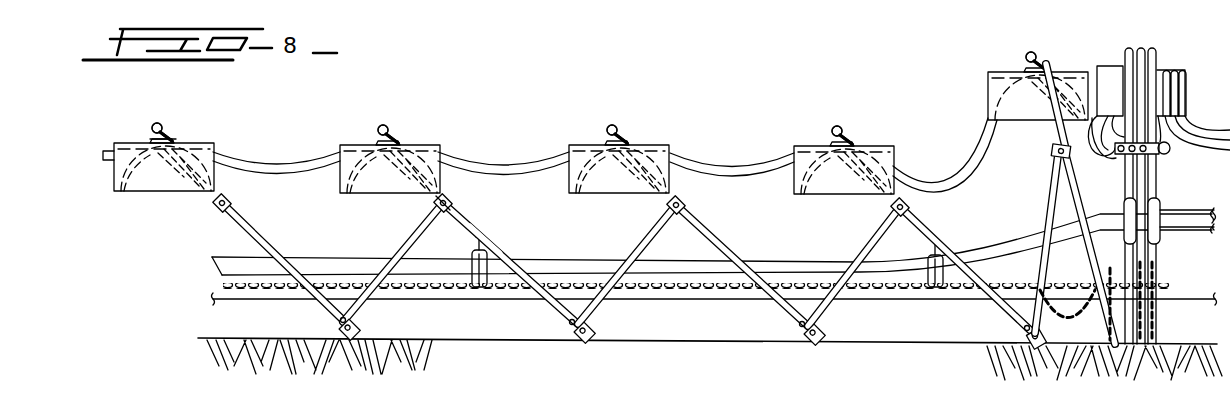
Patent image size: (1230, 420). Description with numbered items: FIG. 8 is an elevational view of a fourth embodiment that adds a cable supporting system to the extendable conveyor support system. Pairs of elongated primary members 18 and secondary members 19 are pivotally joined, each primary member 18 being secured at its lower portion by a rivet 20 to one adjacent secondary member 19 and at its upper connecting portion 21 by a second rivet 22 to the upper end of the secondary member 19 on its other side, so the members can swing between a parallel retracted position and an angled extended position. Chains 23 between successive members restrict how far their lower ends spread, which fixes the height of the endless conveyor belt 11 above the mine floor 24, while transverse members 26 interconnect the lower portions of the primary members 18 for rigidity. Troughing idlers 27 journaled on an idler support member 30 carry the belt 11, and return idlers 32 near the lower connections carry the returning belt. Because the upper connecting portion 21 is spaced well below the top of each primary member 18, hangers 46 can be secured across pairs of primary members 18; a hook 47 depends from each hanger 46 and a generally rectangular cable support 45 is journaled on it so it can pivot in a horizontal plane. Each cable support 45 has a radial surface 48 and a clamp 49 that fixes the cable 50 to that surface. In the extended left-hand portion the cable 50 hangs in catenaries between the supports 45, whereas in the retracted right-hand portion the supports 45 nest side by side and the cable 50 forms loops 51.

The endless conveyor belt 11 is at (334, 257).
The primary member 18 is at (512, 240).
The secondary member 19 is at (408, 246).
The rivet 20 is at (358, 323).
The upper connecting portion 21 is at (452, 198).
The second rivet 22 is at (438, 204).
The chain 23 is at (720, 290).
The mine floor 24 is at (765, 346).
The transverse member 26 is at (590, 327).
The troughing idler 27 is at (476, 252).
The idler support member 30 is at (498, 240).
The return idler 32 is at (325, 308).
The cable support 45 is at (212, 150).
The hanger 46 is at (161, 124).
The hook 47 is at (171, 134).
The radial surface 48 is at (122, 183).
The clamp 49 is at (152, 136).
The cable 50 is at (262, 162).
The loop 51 is at (1108, 160).